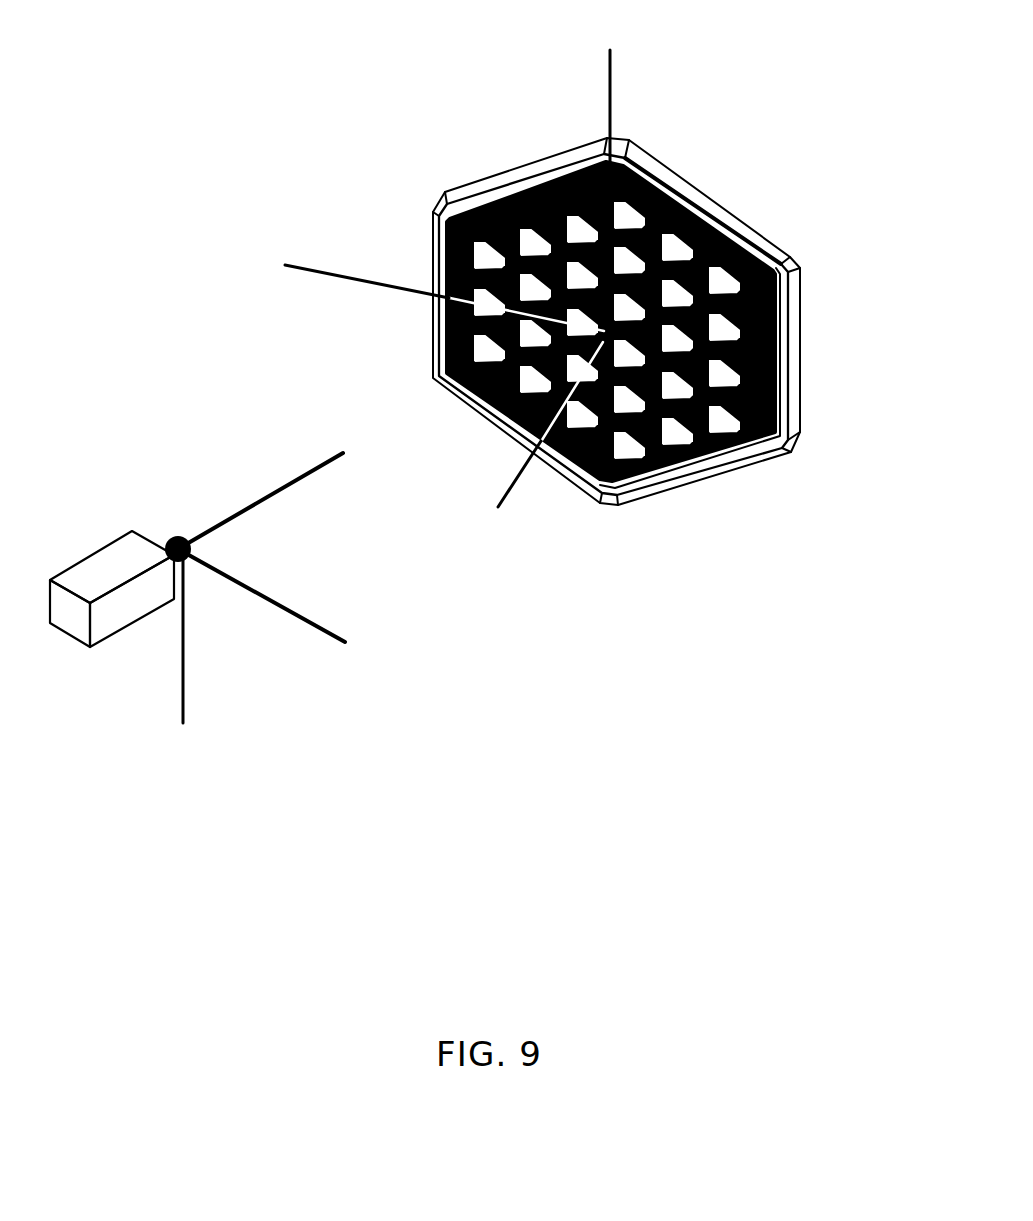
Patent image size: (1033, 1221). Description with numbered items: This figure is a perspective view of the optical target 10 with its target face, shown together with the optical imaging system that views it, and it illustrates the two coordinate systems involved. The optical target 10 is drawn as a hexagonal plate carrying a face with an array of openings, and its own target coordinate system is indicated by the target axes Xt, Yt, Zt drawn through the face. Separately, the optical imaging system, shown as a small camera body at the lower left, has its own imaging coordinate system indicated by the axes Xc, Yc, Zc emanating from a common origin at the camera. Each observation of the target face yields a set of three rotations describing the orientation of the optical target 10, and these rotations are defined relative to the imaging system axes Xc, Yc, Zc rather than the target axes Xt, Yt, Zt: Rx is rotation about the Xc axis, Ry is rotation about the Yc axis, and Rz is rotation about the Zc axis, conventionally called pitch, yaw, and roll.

The optical target 10 is at (667, 187).
The target coordinate system X axis Xt is at (603, 84).
The target coordinate system Y axis Yt is at (339, 270).
The target coordinate system Z axis Zt is at (503, 500).
The imaging coordinate system X axis Xc is at (288, 613).
The imaging coordinate system Y axis Yc is at (180, 667).
The imaging coordinate system Z axis Zc is at (287, 492).